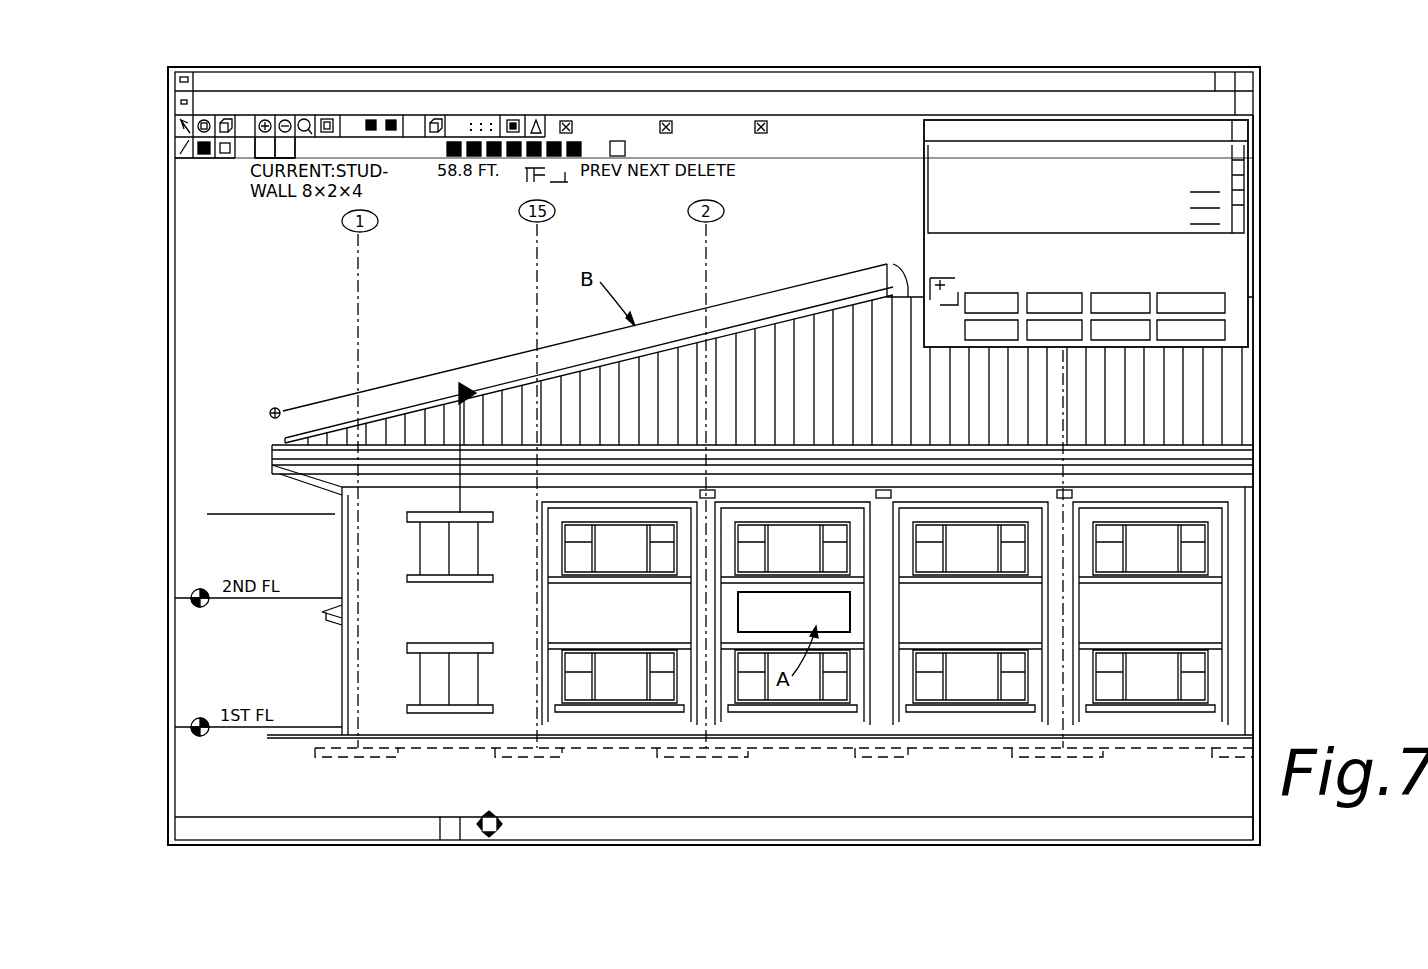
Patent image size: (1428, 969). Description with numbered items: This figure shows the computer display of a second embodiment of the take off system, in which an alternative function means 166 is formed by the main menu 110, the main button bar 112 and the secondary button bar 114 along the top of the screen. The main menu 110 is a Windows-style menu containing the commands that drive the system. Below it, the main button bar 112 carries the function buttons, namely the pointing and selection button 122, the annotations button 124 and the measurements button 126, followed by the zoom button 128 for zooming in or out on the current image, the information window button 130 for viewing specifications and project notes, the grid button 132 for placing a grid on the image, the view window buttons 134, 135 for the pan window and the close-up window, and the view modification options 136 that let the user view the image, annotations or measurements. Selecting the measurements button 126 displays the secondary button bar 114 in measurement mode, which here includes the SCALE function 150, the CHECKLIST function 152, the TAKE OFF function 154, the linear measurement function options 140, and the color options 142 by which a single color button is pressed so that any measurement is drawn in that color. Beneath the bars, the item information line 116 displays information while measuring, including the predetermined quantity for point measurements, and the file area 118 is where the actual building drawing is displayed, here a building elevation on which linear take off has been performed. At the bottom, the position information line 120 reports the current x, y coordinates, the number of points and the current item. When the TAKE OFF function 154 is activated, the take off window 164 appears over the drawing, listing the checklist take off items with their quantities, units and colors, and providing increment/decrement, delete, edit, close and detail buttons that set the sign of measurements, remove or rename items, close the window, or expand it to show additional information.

The main menu 110 is at (170, 80).
The main button bar 112 is at (170, 118).
The secondary button bar 114 is at (170, 149).
The item information line 116 is at (170, 170).
The file area 118 is at (188, 247).
The position information line 120 is at (165, 827).
The pointing and selection button 122 is at (185, 117).
The annotations button 124 is at (215, 118).
The measurements button 126 is at (228, 118).
The zoom button 128 is at (308, 125).
The information window button 130 is at (415, 118).
The grid button 132 is at (482, 118).
The view window button 134 is at (513, 118).
The view window button 135 is at (538, 117).
The view modification options 136 is at (680, 118).
The function options 140 is at (292, 147).
The color options 142 is at (447, 150).
The SCALE function 150 is at (190, 160).
The CHECKLIST function 152 is at (206, 160).
The TAKE OFF function 154 is at (226, 160).
The take off window 164 is at (1240, 262).
The function means 166 is at (1265, 130).